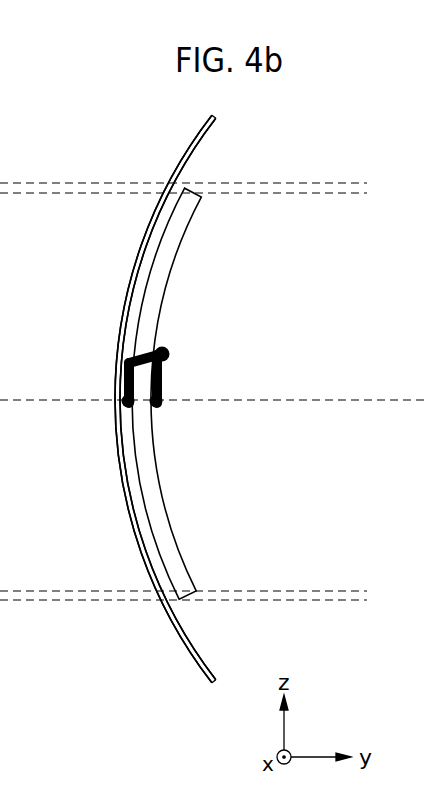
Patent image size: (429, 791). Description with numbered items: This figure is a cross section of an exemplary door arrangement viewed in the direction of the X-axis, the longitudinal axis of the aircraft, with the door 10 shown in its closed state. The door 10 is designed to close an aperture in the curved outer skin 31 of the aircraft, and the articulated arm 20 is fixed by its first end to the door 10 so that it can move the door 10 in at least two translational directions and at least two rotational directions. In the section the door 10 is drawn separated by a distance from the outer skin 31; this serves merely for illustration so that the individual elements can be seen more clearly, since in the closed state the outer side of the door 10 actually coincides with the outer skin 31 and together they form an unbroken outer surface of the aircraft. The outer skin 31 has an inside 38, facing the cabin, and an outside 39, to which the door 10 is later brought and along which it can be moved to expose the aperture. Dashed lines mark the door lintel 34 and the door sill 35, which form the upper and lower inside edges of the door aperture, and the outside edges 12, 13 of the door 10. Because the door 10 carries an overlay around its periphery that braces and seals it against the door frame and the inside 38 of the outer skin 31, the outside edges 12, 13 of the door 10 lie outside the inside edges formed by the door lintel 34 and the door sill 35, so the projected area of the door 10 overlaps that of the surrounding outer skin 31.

The door 10 is at (178, 241).
The outside edge 12 is at (371, 183).
The outside edge 13 is at (371, 601).
The articulated arm 20 is at (202, 363).
The outer skin 31 is at (190, 142).
The door lintel 34 is at (371, 193).
The door sill 35 is at (371, 591).
The inside of the outer skin 38 is at (183, 630).
The outside of the outer skin 39 is at (174, 623).